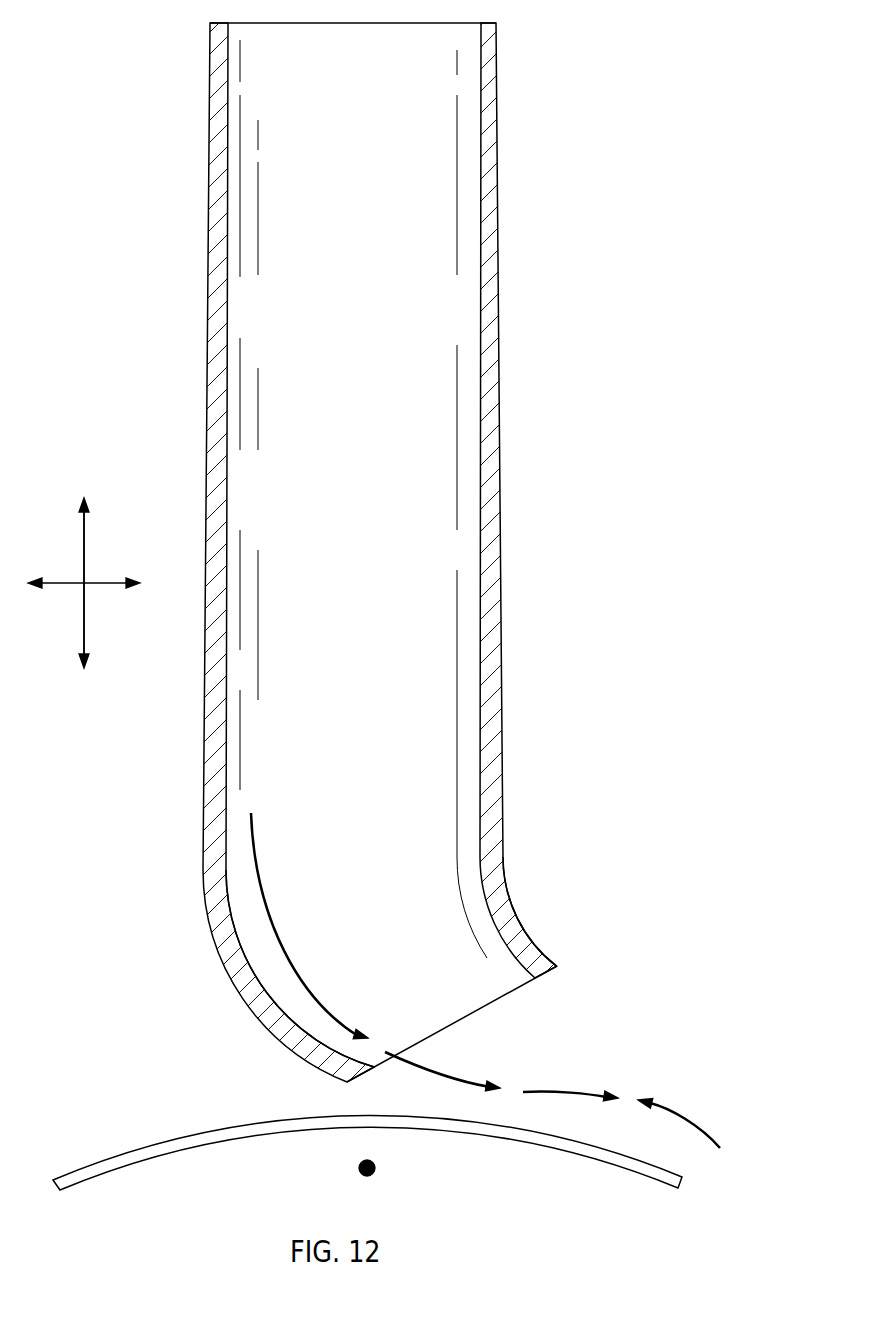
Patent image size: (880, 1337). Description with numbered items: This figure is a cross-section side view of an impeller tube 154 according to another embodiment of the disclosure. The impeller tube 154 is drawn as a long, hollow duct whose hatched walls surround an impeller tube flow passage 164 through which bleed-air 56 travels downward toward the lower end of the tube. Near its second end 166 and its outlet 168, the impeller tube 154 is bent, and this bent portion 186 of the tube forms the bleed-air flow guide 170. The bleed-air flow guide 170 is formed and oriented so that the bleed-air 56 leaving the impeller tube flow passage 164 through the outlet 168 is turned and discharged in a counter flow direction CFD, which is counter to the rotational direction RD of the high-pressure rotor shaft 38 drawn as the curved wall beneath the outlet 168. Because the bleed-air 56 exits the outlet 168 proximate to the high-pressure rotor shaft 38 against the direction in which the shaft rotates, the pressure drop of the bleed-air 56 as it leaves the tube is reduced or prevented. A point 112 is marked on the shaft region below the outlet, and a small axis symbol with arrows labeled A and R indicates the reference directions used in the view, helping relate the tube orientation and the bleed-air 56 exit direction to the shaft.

The impeller tube 154 is at (398, 552).
The impeller tube flow passage 164 is at (368, 457).
The second end 166 is at (540, 948).
The outlet 168 is at (443, 982).
The bleed-air flow guide 170 is at (232, 990).
The bent portion 186 is at (238, 932).
The bleed-air 56 is at (252, 838).
The high-pressure rotor shaft 38 is at (565, 1150).
The axis / center point 112 is at (376, 1168).
The counter flow direction CFD is at (573, 1092).
The rotational direction RD is at (684, 1124).
The axial direction A is at (98, 583).
The radial direction axis R is at (86, 622).